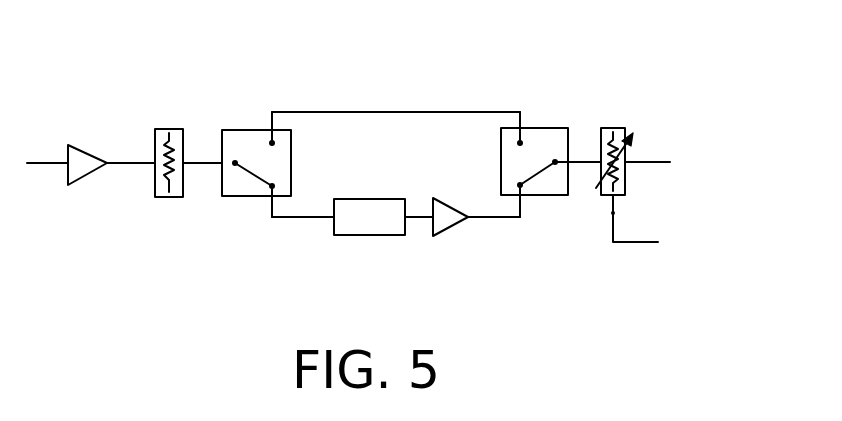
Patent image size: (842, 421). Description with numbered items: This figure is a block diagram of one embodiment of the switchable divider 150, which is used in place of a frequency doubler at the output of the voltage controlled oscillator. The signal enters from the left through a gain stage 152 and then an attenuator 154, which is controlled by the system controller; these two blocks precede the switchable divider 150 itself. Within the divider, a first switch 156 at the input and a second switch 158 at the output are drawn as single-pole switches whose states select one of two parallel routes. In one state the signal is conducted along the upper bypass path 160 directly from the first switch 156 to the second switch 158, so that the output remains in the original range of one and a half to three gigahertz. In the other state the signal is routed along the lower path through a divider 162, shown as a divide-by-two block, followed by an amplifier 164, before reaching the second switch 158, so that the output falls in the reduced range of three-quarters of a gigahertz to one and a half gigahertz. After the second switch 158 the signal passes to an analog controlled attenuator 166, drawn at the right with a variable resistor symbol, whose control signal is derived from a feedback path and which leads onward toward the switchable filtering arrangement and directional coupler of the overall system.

The switchable divider 150 is at (462, 58).
The gain stage 152 is at (82, 153).
The attenuator 154 is at (178, 132).
The first switch 156 is at (240, 190).
The second switch 158 is at (537, 190).
The bypass path 160 is at (327, 123).
The divider 162 is at (348, 228).
The amplifier 164 is at (447, 220).
The analog controlled attenuator 166 is at (622, 132).